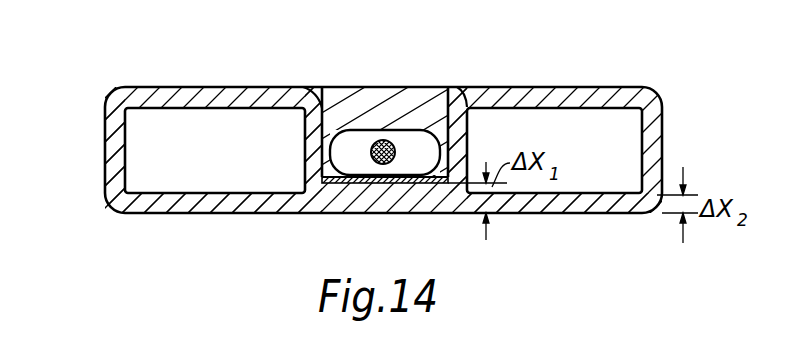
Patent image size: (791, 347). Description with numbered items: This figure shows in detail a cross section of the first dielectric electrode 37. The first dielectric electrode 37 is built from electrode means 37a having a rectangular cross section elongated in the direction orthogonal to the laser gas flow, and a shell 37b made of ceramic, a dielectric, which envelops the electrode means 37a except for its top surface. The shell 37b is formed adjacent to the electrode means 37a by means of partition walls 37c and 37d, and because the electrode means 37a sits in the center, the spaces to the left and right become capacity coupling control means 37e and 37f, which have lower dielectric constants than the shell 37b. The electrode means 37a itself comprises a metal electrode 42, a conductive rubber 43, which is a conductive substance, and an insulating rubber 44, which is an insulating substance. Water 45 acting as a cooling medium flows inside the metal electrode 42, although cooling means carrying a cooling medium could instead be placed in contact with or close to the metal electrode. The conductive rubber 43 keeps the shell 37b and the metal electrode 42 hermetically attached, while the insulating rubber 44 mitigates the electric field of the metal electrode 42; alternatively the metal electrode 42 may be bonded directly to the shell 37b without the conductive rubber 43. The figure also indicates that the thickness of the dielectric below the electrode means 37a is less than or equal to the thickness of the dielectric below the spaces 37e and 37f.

The first dielectric electrode 37 is at (345, 88).
The electrode means 37a is at (436, 108).
The shell 37b is at (113, 150).
The partition wall 37c is at (316, 156).
The partition wall 37d is at (462, 148).
The capacity coupling control means 37e is at (185, 178).
The capacity coupling control means 37f is at (603, 182).
The metal electrode 42 is at (422, 155).
The conductive rubber 43 is at (350, 177).
The insulating rubber 44 is at (388, 110).
The water 45 is at (383, 164).